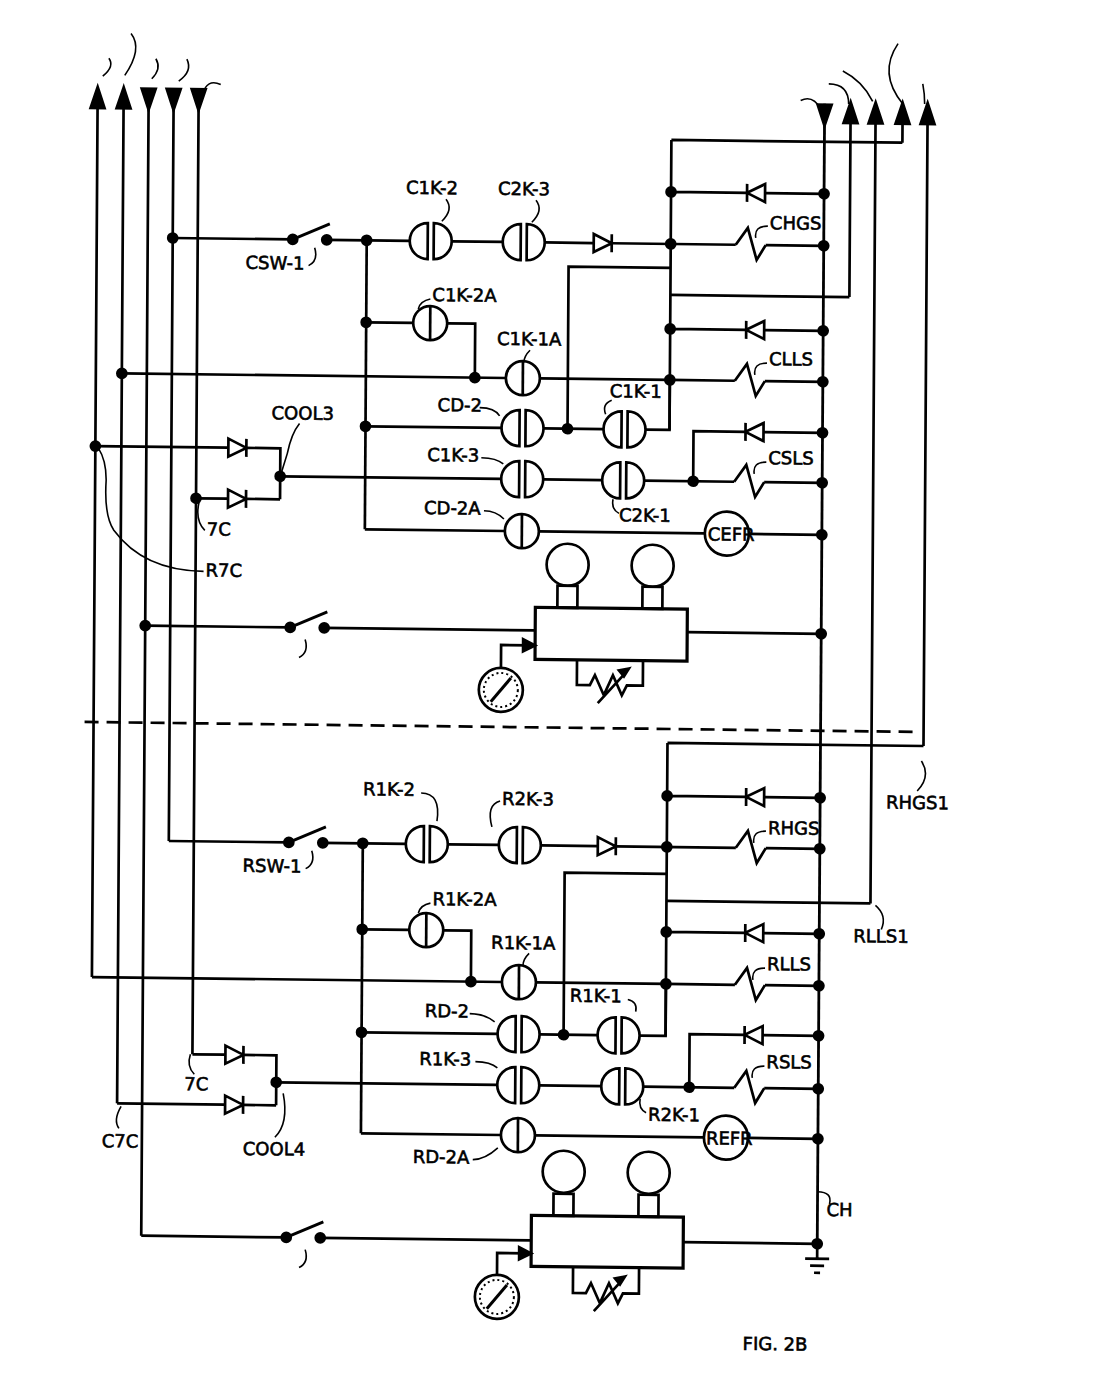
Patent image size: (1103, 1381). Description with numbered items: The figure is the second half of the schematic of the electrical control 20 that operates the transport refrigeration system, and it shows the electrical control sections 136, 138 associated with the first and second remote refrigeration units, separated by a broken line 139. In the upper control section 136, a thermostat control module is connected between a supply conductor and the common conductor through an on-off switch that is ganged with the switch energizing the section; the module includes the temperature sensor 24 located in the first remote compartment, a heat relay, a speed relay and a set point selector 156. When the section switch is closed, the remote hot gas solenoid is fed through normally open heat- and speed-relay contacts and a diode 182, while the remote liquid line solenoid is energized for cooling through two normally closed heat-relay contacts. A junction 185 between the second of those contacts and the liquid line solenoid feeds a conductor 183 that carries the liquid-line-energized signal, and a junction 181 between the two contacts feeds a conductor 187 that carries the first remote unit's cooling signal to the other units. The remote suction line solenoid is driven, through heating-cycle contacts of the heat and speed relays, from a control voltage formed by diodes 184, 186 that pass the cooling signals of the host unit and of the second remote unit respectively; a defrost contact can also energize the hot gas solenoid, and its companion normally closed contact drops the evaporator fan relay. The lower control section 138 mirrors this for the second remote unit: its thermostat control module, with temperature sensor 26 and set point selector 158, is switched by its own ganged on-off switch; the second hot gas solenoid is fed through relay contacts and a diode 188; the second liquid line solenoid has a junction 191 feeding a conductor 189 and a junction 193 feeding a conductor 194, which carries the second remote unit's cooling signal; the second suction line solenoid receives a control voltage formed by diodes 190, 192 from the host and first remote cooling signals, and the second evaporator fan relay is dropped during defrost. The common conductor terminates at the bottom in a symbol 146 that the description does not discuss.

The electrical control 20 is at (519, 628).
The temperature sensor 24 is at (623, 691).
The temperature sensor 26 is at (623, 1299).
The electrical control section 136 is at (483, 626).
The electrical control section 138 is at (483, 1019).
The broken line 139 is at (721, 725).
The ground 146 is at (832, 1266).
The set point selector 156 is at (481, 674).
The set point selector 158 is at (482, 1282).
The junction 181 is at (473, 376).
The diode 182 is at (605, 229).
The conductor 183 is at (686, 292).
The diode 184 is at (243, 514).
The junction 185 is at (674, 373).
The diode 186 is at (242, 440).
The conductor 187 is at (344, 373).
The diode 188 is at (612, 831).
The conductor 189 is at (676, 899).
The diode 190 is at (240, 1048).
The junction 191 is at (676, 978).
The diode 192 is at (237, 1118).
The junction 193 is at (473, 981).
The conductor 194 is at (279, 973).